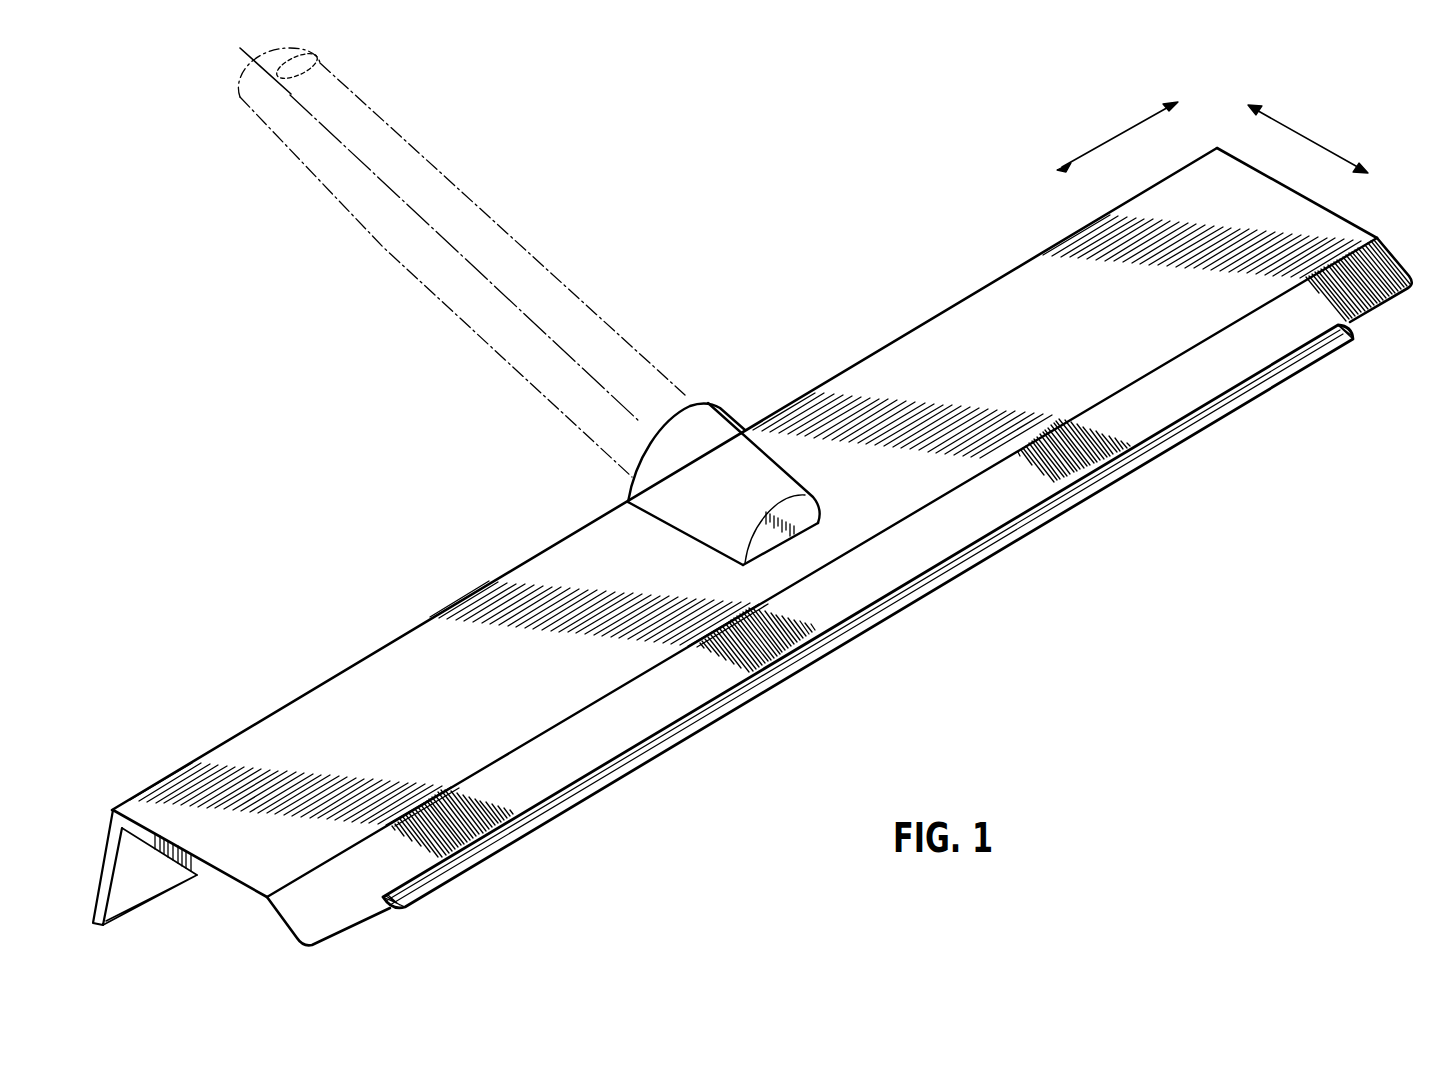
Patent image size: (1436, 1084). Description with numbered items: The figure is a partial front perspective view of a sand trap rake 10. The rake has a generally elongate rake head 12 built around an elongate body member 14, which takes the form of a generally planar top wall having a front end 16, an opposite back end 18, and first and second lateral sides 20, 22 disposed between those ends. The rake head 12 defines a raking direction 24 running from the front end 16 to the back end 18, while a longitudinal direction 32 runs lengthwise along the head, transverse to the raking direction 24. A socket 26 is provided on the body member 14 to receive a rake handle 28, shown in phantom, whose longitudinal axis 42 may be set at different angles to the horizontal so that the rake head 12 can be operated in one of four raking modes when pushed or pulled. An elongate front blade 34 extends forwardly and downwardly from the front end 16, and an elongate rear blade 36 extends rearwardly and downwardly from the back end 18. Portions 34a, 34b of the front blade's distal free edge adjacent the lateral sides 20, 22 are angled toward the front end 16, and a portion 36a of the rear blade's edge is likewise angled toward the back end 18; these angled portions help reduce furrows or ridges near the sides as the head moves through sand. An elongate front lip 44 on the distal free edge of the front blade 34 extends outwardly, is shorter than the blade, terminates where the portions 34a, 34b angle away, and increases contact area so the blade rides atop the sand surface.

The sand trap rake 10 is at (1040, 117).
The rake head 12 is at (1023, 258).
The elongate body member 14 is at (305, 711).
The front end 16 is at (1211, 333).
The back end 18 is at (239, 735).
The first lateral side 20 is at (233, 892).
The second lateral side 22 is at (1285, 186).
The raking direction 24 is at (1303, 133).
The socket 26 is at (705, 401).
The rake handle 28 is at (367, 238).
The longitudinal direction 32 is at (1117, 132).
The front blade 34 is at (925, 560).
The angled portion of front blade distal free edge 34a is at (355, 927).
The angled portion of front blade distal free edge 34b is at (1373, 319).
The rear blade 36 is at (106, 856).
The angled portion of rear blade distal free edge 36a is at (152, 887).
The longitudinal axis of rake handle 42 is at (252, 58).
The front lip 44 is at (1190, 430).